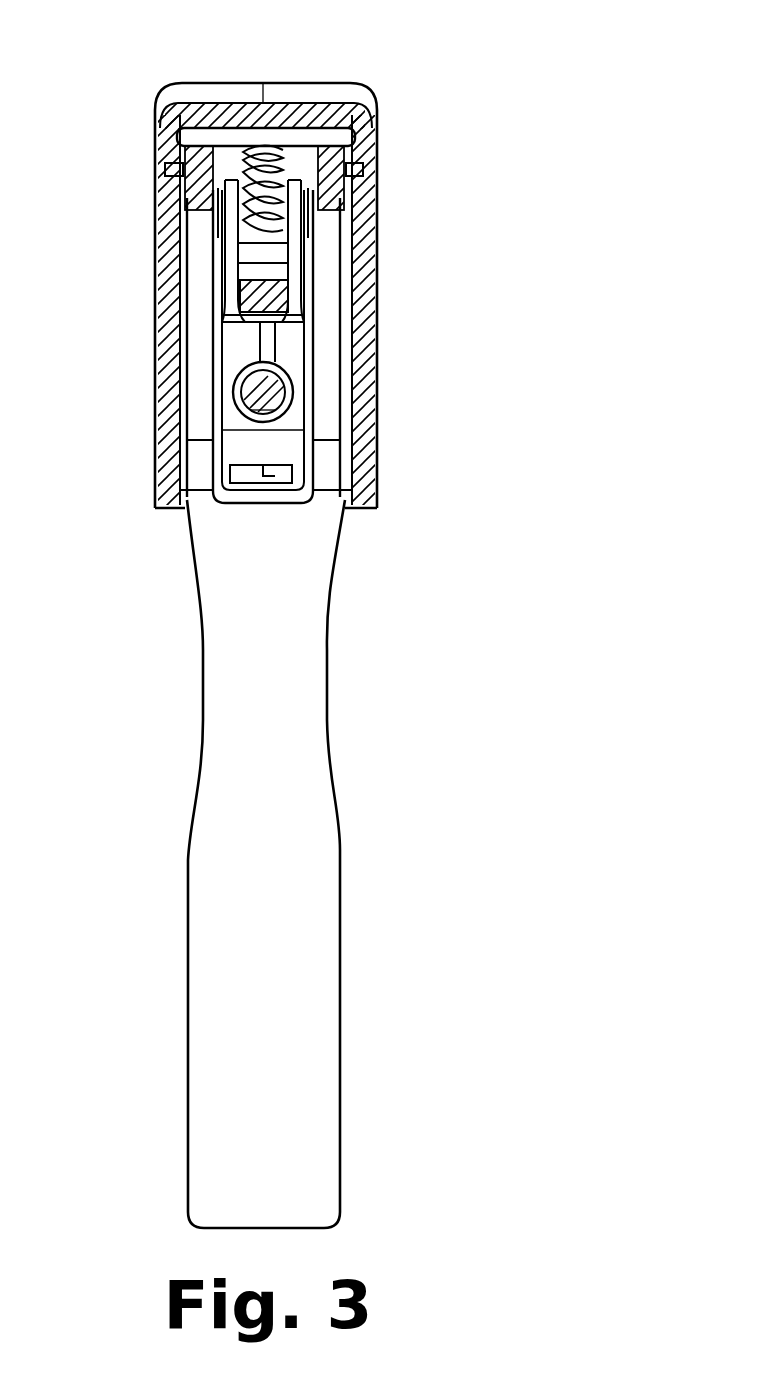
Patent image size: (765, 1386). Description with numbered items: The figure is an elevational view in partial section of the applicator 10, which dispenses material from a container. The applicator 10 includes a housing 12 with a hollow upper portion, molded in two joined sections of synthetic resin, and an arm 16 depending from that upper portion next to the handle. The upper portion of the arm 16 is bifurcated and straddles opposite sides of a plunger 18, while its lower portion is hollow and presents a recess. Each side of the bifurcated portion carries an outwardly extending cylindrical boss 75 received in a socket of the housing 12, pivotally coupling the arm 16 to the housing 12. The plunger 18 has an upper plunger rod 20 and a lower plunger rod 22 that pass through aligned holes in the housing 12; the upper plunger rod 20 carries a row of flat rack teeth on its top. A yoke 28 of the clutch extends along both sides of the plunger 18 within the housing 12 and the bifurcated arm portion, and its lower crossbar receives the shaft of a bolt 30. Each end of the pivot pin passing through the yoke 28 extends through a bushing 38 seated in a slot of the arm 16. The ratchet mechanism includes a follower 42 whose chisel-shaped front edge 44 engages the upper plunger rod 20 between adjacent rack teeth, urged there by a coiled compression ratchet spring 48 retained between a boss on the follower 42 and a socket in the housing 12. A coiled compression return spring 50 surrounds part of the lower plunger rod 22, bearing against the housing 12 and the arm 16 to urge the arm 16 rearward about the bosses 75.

The applicator 10 is at (398, 72).
The housing 12 is at (365, 468).
The arm 16 is at (287, 997).
The plunger 18 is at (292, 396).
The upper plunger rod 20 is at (297, 316).
The lower plunger rod 22 is at (238, 401).
The yoke 28 is at (305, 387).
The bolt 30 is at (277, 500).
The bushing 38 is at (345, 230).
The follower 42 is at (278, 234).
The front edge 44 is at (217, 317).
The ratchet spring 48 is at (285, 178).
The return spring 50 is at (250, 428).
The cylindrical boss 75 is at (165, 171).